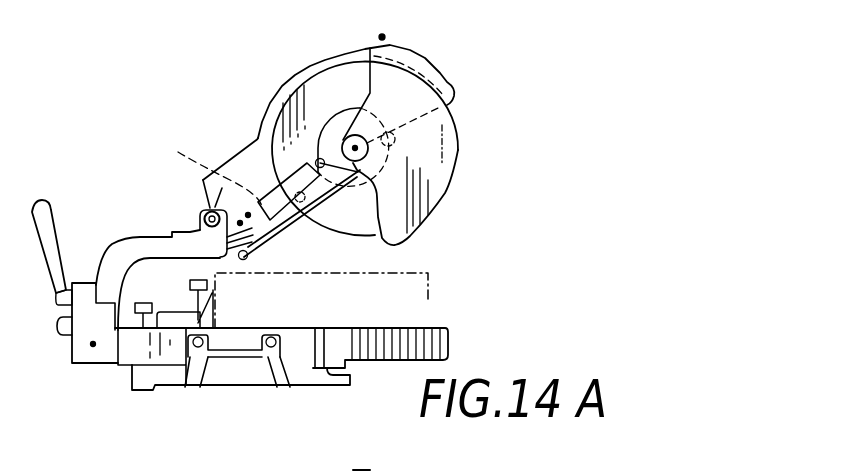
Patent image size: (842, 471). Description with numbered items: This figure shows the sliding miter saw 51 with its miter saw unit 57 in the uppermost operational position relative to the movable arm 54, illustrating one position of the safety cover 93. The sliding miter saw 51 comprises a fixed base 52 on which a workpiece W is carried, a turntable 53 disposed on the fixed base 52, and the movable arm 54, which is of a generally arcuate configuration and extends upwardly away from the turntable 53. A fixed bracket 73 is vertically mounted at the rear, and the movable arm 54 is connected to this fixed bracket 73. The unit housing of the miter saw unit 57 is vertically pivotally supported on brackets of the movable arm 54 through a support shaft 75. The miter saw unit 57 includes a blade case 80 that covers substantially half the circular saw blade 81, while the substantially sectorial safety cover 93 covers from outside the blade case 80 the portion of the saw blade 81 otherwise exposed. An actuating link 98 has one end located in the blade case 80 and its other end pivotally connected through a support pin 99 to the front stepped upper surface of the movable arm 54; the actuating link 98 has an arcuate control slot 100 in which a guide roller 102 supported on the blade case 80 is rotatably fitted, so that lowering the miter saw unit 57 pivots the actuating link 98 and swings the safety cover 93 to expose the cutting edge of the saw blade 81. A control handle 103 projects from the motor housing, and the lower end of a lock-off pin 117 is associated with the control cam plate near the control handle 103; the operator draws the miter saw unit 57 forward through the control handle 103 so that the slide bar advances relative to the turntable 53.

The sliding miter saw 51 is at (250, 135).
The fixed base 52 is at (172, 378).
The turntable 53 is at (137, 353).
The movable arm 54 is at (110, 245).
The miter saw unit 57 is at (228, 162).
The fixed bracket 73 is at (75, 352).
The support shaft 75 is at (205, 216).
The blade case 80 is at (303, 72).
The circular saw blade 81 is at (438, 206).
The safety cover 93 is at (459, 146).
The actuating link 98 is at (268, 236).
The support pin 99 is at (160, 235).
The control slot 100 is at (203, 173).
The guide roller 102 is at (303, 217).
The control handle 103 is at (447, 78).
The lock-off pin 117 is at (385, 35).
The workpiece W is at (428, 300).